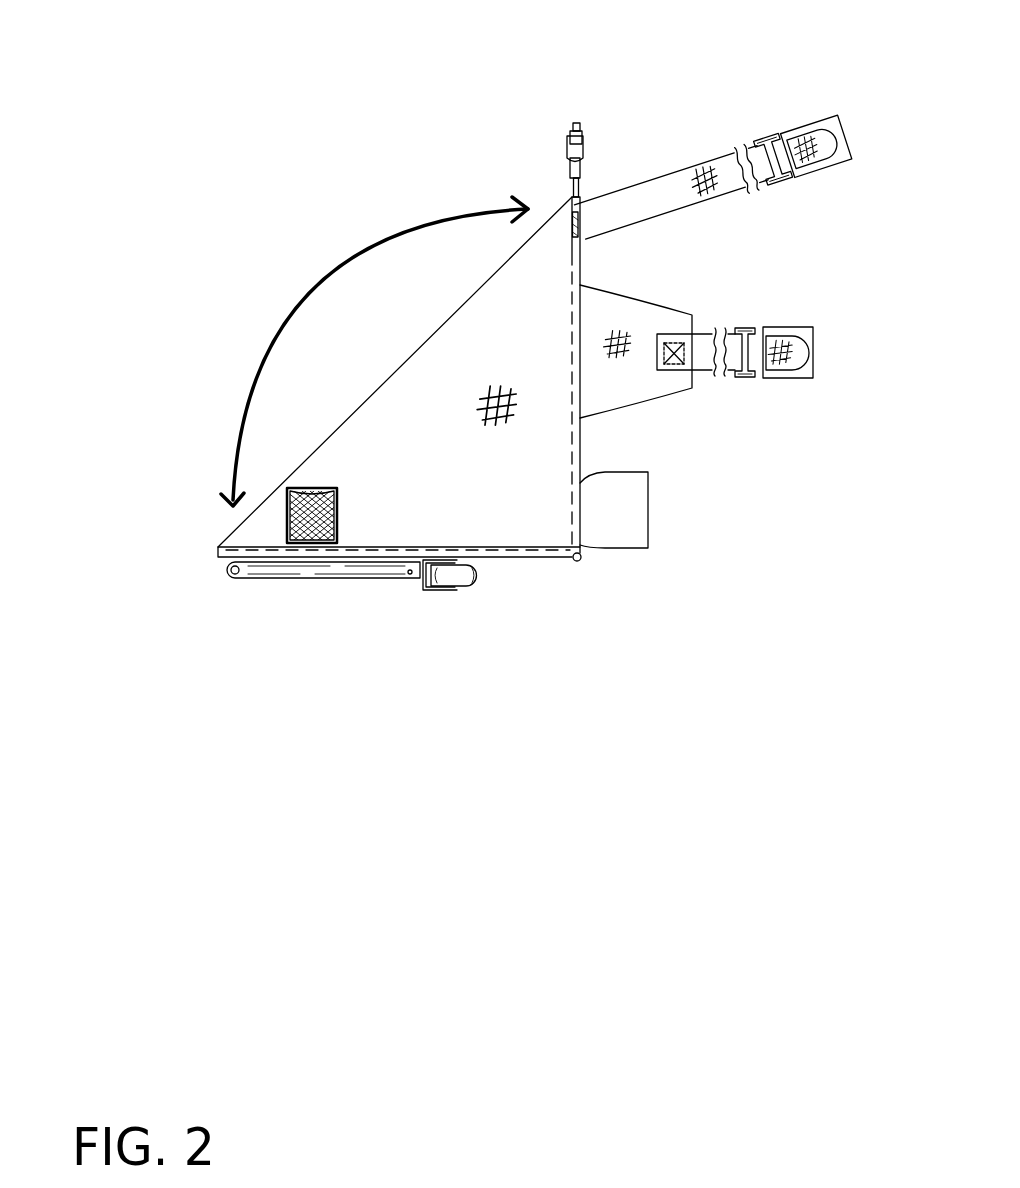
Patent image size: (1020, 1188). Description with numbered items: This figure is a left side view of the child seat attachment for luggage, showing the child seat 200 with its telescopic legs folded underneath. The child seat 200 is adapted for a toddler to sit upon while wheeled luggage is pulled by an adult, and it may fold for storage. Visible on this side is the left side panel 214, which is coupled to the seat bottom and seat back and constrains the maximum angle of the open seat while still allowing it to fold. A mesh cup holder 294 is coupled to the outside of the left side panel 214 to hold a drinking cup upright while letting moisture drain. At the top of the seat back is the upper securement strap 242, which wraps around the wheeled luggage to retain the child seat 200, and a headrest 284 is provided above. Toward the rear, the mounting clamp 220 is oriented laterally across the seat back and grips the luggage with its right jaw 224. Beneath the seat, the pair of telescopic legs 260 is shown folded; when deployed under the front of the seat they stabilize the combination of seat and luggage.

The child seat 200 is at (152, 123).
The left side panel 214 is at (418, 383).
The mounting clamp 220 is at (663, 468).
The right jaw 224 is at (748, 327).
The upper securement strap 242 is at (622, 200).
The pair of telescopic legs 260 is at (482, 610).
The headrest 284 is at (567, 142).
The mesh cup holders 294 is at (320, 492).